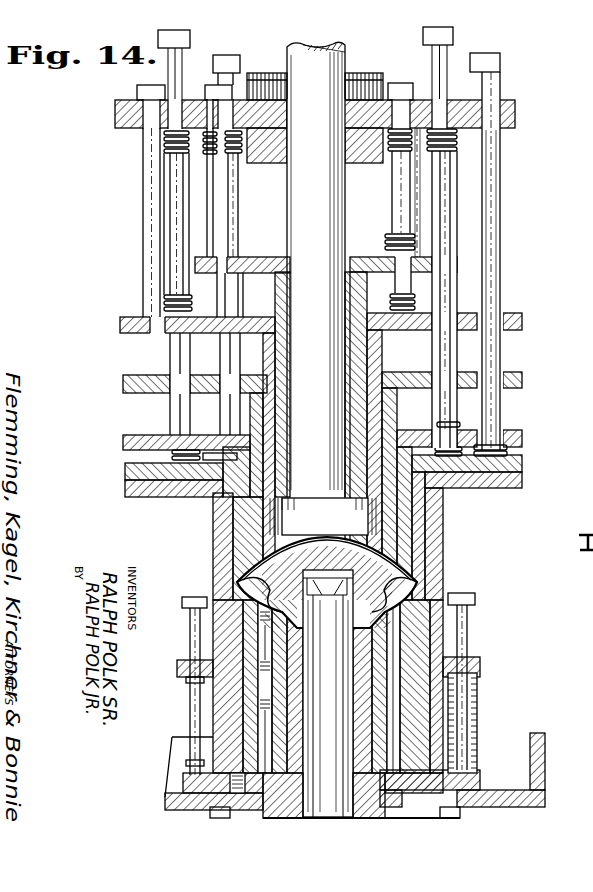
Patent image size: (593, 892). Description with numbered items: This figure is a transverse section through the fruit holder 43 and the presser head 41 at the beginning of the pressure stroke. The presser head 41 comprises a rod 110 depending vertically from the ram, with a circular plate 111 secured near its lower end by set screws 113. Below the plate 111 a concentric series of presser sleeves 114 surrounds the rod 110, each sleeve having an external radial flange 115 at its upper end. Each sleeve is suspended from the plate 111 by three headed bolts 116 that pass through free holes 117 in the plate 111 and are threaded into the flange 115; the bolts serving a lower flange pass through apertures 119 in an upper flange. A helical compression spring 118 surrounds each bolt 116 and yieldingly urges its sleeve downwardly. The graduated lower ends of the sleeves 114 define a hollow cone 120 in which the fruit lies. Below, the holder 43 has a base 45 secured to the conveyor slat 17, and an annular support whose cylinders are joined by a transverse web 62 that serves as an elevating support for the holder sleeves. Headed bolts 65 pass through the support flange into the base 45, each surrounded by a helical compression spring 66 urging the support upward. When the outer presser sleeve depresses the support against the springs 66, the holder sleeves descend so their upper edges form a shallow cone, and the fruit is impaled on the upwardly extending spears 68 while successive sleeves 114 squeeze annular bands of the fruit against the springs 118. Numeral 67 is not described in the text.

The rod 110 is at (345, 48).
The set screws 113 is at (381, 84).
The circular plate 111 is at (509, 110).
The free holes 117 is at (117, 124).
The headed bolts 116 is at (490, 259).
The apertures 119 is at (522, 378).
The helical compression spring 118 is at (518, 449).
The external radial flange 115 is at (522, 481).
The presser sleeves 114 is at (441, 548).
The hollow cone 120 is at (345, 532).
The incising knives or spears 68 is at (255, 550).
The presser head 41 is at (113, 360).
The headed bolts 65 is at (193, 634).
The fruit holder 43 is at (504, 643).
The transverse web 62 is at (450, 718).
The helical compression spring 66 is at (473, 761).
The base 45 is at (480, 783).
The conveyor slat 17 is at (547, 768).
The block 67 is at (400, 813).